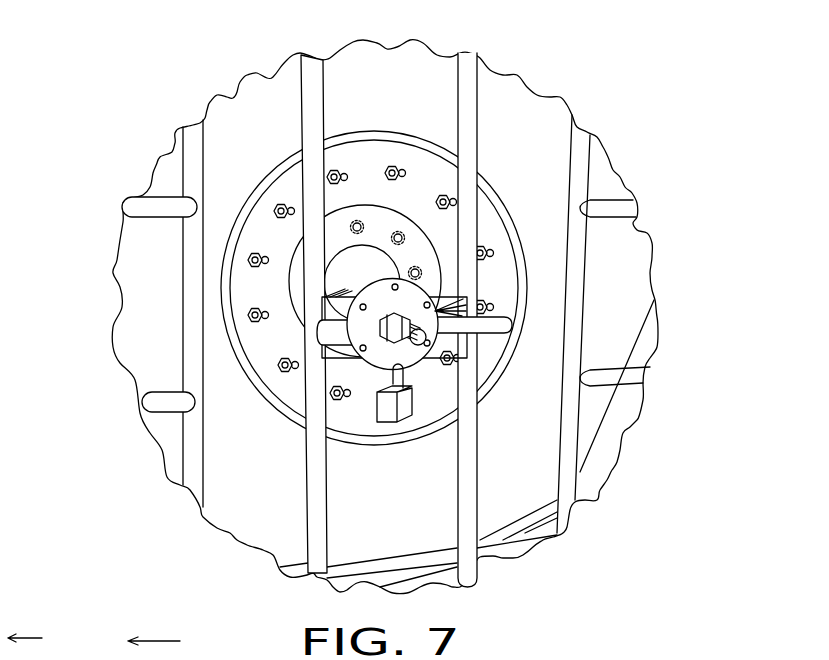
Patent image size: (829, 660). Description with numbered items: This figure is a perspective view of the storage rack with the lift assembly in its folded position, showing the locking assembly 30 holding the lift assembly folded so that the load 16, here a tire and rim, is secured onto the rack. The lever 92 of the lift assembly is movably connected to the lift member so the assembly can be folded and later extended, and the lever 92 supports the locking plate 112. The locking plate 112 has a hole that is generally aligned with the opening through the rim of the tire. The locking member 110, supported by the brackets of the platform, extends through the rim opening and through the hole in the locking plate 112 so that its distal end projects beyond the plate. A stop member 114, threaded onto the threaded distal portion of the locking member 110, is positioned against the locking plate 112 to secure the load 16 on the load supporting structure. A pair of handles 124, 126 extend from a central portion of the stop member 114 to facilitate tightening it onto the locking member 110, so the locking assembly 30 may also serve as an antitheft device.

The load 16 is at (533, 143).
The lever 92 is at (470, 495).
The locking plate 112 is at (328, 312).
The handle 124 is at (320, 335).
The handle 126 is at (510, 330).
The locking assembly 30 is at (432, 310).
The stop member 114 is at (430, 278).
The locking member 110 is at (392, 337).